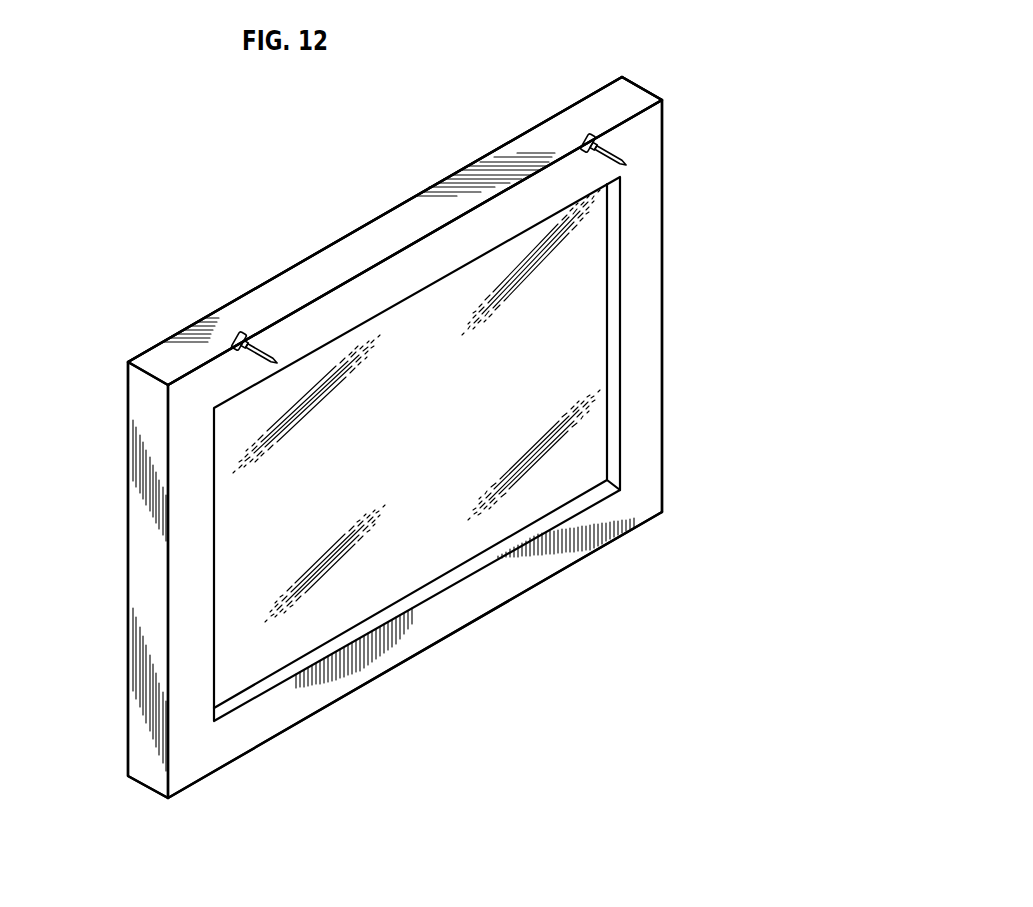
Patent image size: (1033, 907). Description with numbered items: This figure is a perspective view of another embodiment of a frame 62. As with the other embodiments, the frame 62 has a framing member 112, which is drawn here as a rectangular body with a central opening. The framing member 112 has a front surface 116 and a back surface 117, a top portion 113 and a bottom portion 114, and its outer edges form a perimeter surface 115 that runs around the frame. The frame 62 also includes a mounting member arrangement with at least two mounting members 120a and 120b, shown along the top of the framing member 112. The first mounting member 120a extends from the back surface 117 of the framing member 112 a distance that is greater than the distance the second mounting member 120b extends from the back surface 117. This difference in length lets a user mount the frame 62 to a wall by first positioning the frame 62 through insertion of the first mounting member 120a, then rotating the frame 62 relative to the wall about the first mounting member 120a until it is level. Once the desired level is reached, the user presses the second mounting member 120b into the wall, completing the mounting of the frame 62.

The frame 62 is at (728, 148).
The framing member 112 is at (525, 152).
The top portion 113 is at (368, 248).
The bottom portion 114 is at (418, 657).
The perimeter surface 115 is at (150, 522).
The front surface 116 is at (302, 258).
The back surface 117 is at (648, 300).
The first mounting member 120a is at (233, 335).
The second mounting member 120b is at (610, 137).